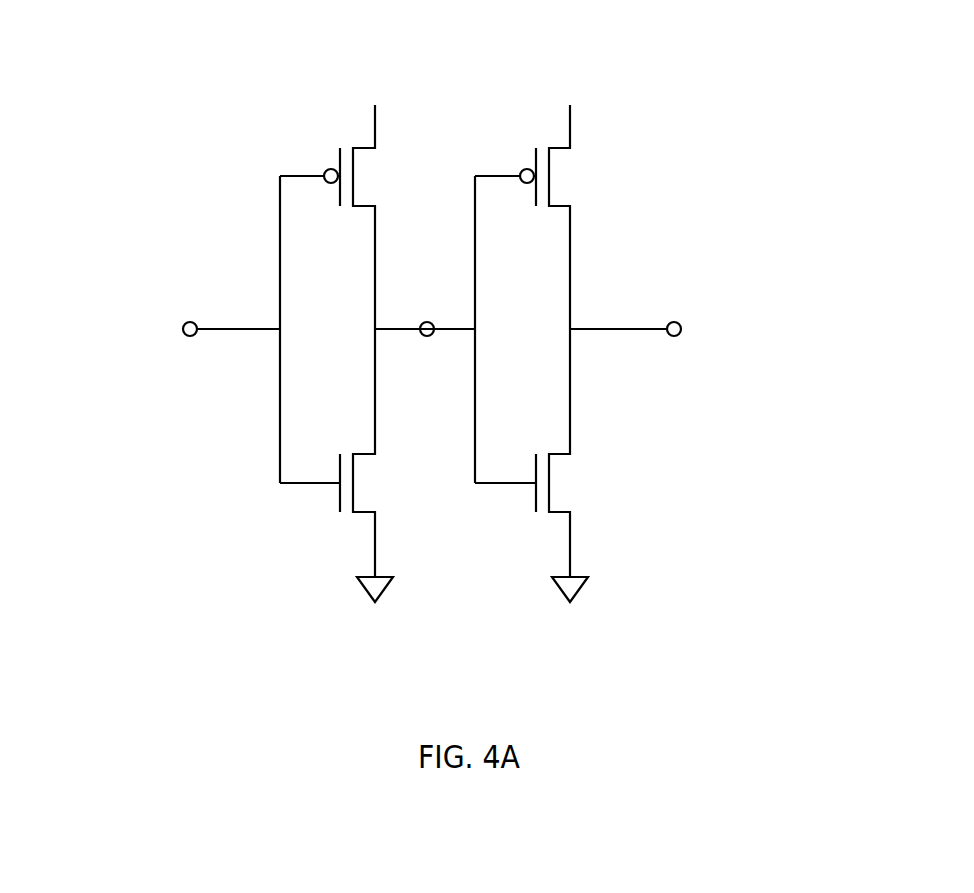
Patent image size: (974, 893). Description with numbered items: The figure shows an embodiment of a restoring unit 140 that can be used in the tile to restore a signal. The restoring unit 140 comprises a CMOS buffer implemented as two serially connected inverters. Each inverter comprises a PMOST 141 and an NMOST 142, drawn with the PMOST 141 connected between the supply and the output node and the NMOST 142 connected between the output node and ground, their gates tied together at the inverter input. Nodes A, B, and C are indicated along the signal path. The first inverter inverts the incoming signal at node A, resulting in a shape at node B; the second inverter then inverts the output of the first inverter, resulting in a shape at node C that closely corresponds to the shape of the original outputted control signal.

The restoring unit 140 is at (561, 324).
The PMOST 141 is at (322, 152).
The NMOST 142 is at (323, 498).